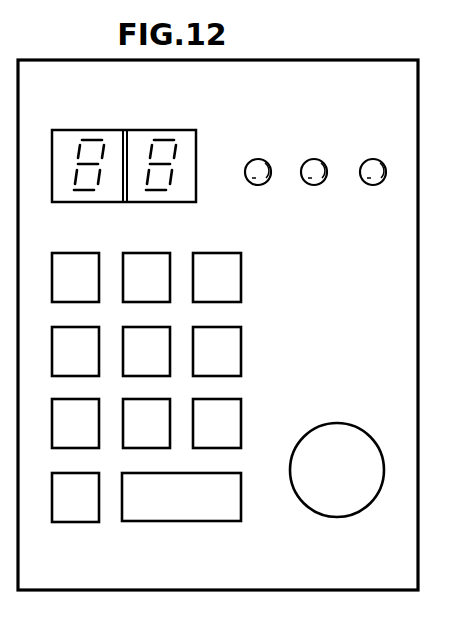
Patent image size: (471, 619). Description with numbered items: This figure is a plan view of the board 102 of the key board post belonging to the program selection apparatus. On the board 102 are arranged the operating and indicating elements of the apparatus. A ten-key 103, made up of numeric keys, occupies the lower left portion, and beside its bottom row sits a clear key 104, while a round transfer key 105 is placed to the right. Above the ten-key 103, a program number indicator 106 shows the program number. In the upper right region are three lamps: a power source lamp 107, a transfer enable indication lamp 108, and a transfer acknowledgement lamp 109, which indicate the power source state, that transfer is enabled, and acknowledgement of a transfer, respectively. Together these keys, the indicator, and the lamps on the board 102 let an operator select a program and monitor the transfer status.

The board 102 is at (397, 50).
The ten-key 103 is at (242, 281).
The clear key 104 is at (217, 521).
The transfer key 105 is at (343, 517).
The program number indicator 106 is at (154, 203).
The power source lamp 107 is at (375, 185).
The transfer enable indication lamp 108 is at (316, 185).
The transfer acknowledgement lamp 109 is at (262, 185).